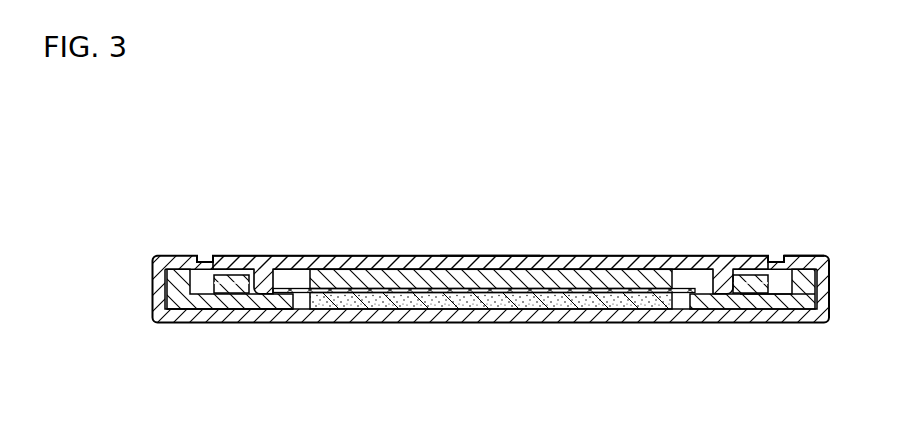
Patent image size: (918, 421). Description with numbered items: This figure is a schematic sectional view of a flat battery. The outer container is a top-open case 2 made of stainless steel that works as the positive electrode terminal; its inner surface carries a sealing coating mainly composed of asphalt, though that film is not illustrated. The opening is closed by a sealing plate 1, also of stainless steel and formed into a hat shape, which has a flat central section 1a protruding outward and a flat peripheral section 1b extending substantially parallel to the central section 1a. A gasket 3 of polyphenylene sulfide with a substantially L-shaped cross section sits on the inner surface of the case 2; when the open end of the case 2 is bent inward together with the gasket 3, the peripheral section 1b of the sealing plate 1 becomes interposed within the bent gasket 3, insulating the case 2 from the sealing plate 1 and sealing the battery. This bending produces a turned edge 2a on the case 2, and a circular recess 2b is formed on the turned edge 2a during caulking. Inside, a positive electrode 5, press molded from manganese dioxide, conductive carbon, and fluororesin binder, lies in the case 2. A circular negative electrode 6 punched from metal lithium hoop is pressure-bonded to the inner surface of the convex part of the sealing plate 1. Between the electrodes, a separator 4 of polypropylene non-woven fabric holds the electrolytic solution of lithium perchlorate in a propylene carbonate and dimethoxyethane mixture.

The sealing plate 1 is at (418, 262).
The central section 1a is at (497, 257).
The peripheral section 1b is at (777, 307).
The case 2 is at (485, 318).
The turned edge 2a is at (830, 235).
The circular recess 2b is at (205, 302).
The gasket 3 is at (735, 307).
The separator 4 is at (622, 290).
The positive electrode 5 is at (335, 303).
The negative electrode 6 is at (345, 277).